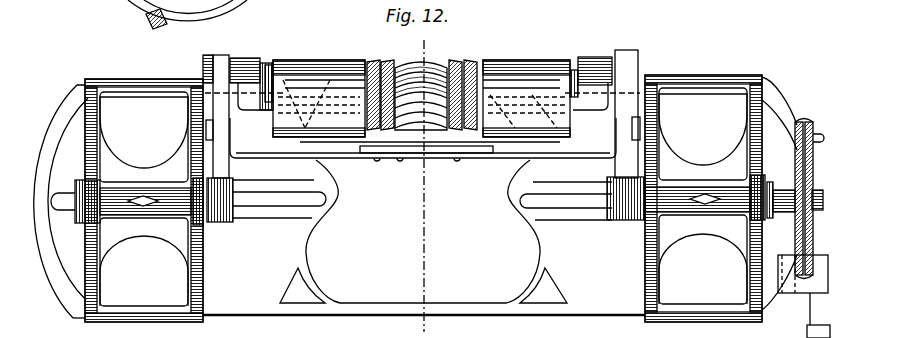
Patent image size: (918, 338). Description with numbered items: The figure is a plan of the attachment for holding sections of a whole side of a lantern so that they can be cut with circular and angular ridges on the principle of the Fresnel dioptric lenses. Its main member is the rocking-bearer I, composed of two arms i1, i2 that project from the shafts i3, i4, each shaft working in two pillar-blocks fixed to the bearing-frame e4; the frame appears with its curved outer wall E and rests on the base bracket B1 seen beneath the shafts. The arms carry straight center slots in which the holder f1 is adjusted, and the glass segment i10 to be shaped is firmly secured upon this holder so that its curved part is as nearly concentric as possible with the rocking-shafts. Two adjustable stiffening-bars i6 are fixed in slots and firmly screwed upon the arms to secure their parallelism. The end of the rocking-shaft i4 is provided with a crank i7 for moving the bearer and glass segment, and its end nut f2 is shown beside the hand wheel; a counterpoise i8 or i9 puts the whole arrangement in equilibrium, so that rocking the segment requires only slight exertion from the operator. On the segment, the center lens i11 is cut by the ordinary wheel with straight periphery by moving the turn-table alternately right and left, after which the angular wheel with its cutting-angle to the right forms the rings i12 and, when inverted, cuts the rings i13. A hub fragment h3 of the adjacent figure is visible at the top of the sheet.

The hub fragment of adjacent figure h3 is at (187, 22).
The rocking-bearer I is at (423, 198).
The frame curved arm E is at (408, 197).
The bearing-frame e4 is at (311, 200).
The shaft i3 is at (53, 200).
The adjustable stiffening-bars i6 is at (423, 151).
The arm i1 is at (218, 126).
The holder f1 is at (422, 70).
The glass segment i10 is at (417, 84).
The rings i13 is at (380, 81).
The rings i12 is at (463, 81).
The center lens i11 is at (421, 81).
The arm i2 is at (626, 121).
The rocking-shaft i4 is at (775, 195).
The shaft end nut f2 is at (824, 200).
The crank i7 is at (811, 199).
The counterpoise i9 is at (809, 279).
The counterpoise i8 is at (807, 315).
The base bracket B1 is at (423, 186).